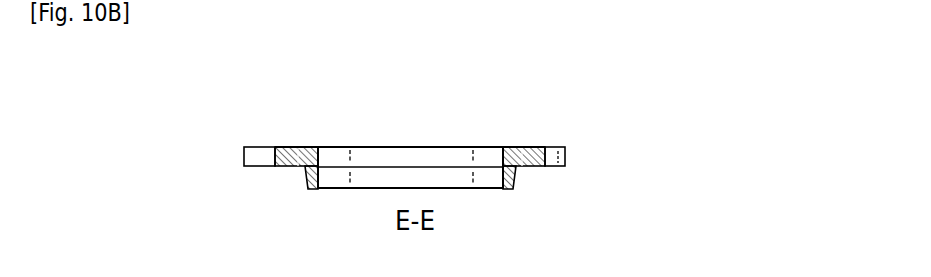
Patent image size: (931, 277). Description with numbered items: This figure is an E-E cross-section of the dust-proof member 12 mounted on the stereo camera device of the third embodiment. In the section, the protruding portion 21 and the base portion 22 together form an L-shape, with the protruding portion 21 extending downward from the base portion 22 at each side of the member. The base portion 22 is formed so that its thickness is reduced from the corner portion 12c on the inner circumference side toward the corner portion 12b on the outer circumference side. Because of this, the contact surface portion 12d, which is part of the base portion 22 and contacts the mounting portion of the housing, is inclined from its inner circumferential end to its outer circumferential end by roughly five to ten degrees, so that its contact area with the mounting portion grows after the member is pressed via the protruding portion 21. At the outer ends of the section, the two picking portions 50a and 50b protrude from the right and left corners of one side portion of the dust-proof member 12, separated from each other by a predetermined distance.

The dust-proof member 12 is at (408, 82).
The corner portion on the outer circumference side 12b is at (276, 140).
The corner portion on the inner circumference side 12c is at (324, 138).
The contact surface portion 12d is at (297, 137).
The protruding portion 21 is at (309, 190).
The base portion 22 is at (298, 167).
The picking portion 50a is at (565, 157).
The picking portion 50b is at (244, 157).